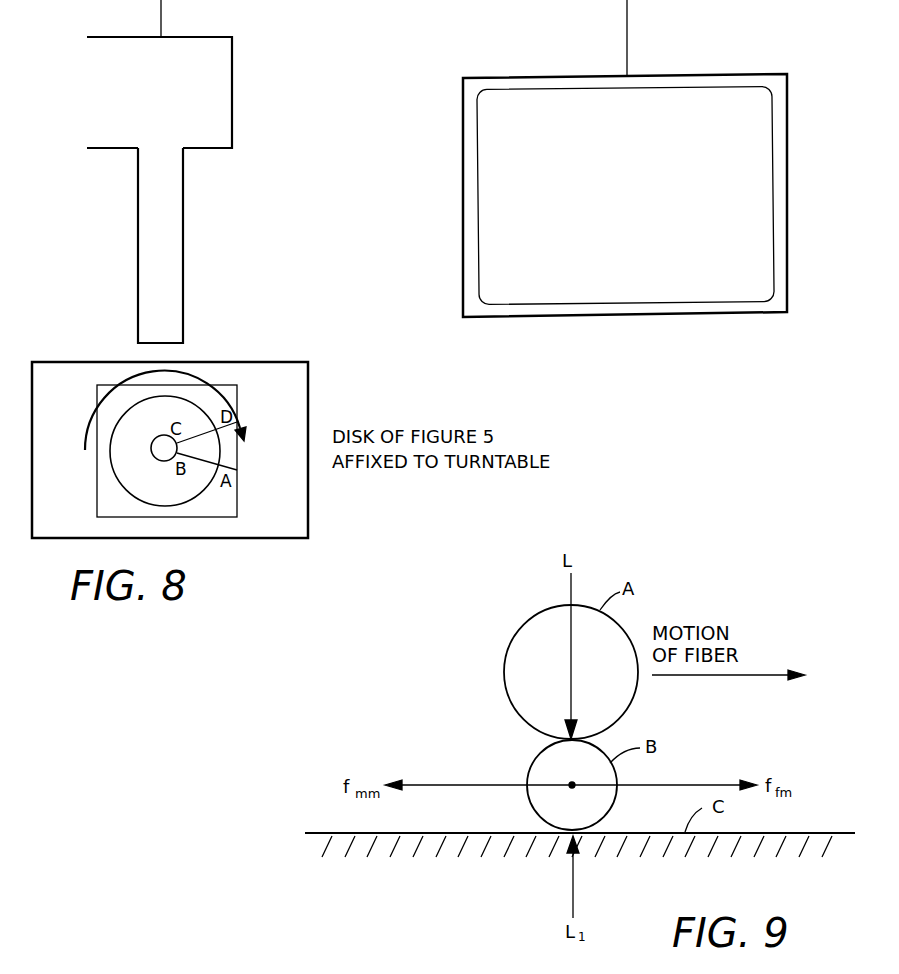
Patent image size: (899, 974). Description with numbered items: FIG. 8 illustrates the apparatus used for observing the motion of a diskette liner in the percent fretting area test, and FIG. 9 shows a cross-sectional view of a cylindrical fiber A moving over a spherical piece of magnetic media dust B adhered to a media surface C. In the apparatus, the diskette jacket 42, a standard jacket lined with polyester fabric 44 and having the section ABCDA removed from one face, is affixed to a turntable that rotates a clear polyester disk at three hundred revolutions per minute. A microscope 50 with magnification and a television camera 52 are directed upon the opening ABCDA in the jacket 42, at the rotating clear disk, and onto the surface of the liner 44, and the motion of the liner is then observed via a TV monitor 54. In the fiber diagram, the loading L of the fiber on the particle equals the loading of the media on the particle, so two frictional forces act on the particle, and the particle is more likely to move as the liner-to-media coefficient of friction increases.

The jacket 42 is at (237, 513).
The polyester fabric liner 44 is at (118, 467).
The microscope 50 is at (184, 307).
The television camera 52 is at (227, 112).
The TV monitor 54 is at (558, 82).